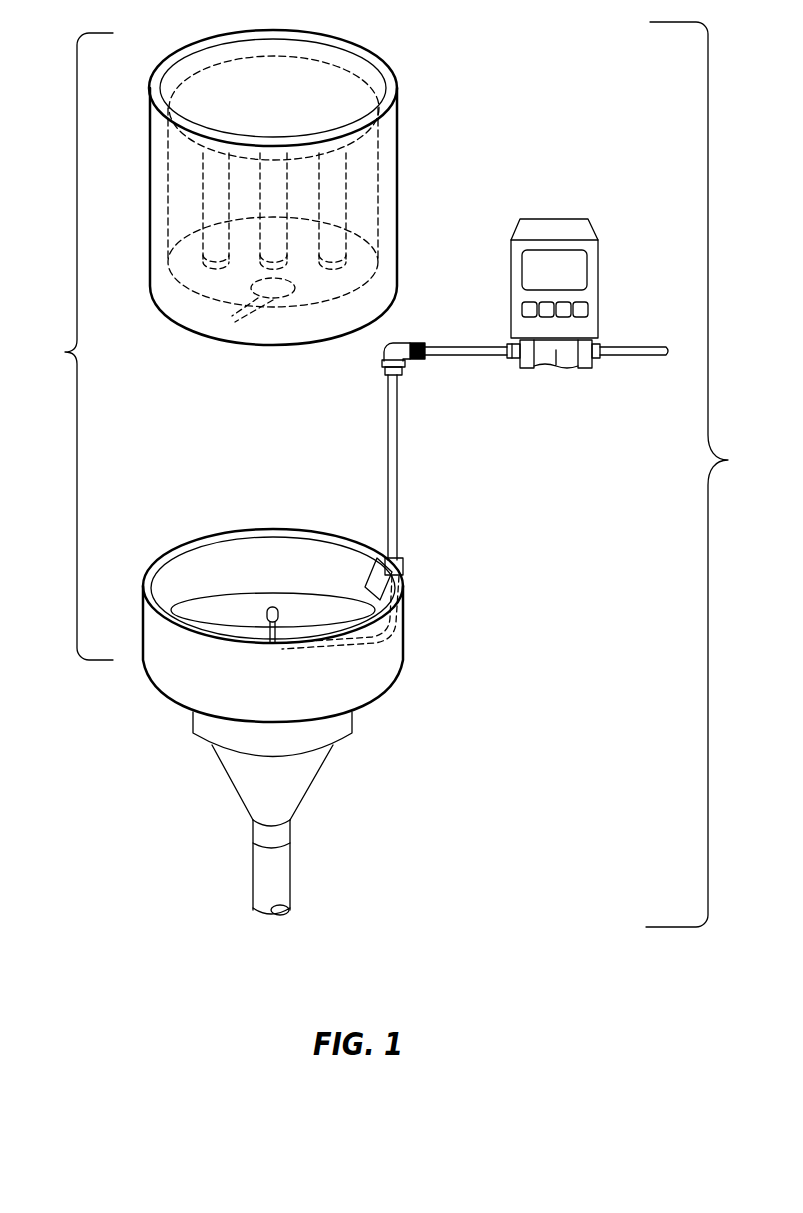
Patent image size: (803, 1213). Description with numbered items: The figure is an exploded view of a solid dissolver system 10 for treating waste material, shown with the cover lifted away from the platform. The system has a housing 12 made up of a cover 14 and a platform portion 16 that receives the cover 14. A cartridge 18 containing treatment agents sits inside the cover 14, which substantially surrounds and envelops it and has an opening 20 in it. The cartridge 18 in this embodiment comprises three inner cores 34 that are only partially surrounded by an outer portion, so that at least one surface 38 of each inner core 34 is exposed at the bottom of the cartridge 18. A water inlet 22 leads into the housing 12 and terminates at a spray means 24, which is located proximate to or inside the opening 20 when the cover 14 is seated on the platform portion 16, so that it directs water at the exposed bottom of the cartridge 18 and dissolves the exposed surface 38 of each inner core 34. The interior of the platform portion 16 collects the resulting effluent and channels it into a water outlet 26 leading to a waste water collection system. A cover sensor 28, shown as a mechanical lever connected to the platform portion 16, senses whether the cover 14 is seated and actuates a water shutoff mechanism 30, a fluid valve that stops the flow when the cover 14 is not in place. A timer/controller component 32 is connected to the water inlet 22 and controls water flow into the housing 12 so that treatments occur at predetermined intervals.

The solid dissolver system 10 is at (702, 474).
The housing 12 is at (75, 346).
The cover 14 is at (355, 68).
The platform portion 16 is at (378, 682).
The cartridge 18 is at (380, 164).
The opening 20 is at (248, 303).
The water inlet 22 is at (398, 444).
The spray means 24 is at (268, 608).
The water outlet 26 is at (288, 872).
The cover sensor 28 is at (375, 580).
The water shutoff mechanism 30 is at (404, 585).
The timer/controller component 32 is at (600, 282).
The inner cores 34 is at (216, 232).
The surface of inner core 38 is at (218, 270).